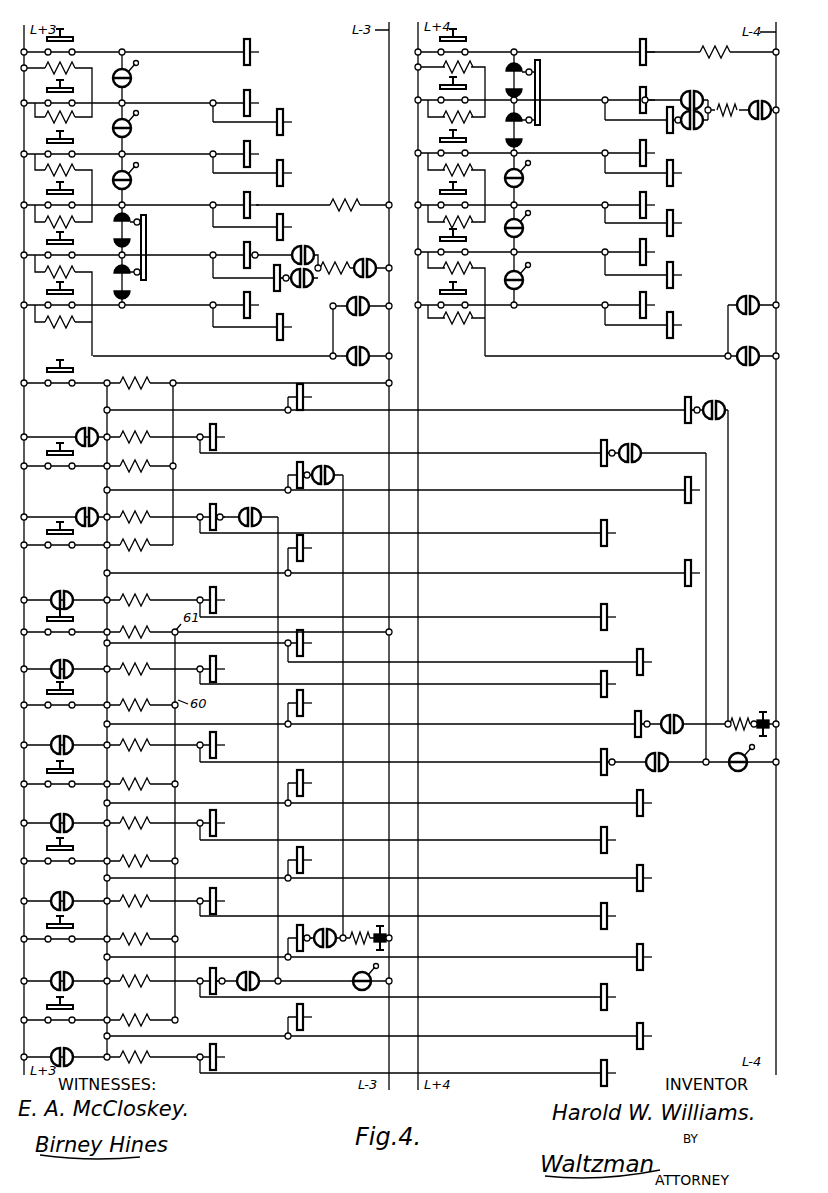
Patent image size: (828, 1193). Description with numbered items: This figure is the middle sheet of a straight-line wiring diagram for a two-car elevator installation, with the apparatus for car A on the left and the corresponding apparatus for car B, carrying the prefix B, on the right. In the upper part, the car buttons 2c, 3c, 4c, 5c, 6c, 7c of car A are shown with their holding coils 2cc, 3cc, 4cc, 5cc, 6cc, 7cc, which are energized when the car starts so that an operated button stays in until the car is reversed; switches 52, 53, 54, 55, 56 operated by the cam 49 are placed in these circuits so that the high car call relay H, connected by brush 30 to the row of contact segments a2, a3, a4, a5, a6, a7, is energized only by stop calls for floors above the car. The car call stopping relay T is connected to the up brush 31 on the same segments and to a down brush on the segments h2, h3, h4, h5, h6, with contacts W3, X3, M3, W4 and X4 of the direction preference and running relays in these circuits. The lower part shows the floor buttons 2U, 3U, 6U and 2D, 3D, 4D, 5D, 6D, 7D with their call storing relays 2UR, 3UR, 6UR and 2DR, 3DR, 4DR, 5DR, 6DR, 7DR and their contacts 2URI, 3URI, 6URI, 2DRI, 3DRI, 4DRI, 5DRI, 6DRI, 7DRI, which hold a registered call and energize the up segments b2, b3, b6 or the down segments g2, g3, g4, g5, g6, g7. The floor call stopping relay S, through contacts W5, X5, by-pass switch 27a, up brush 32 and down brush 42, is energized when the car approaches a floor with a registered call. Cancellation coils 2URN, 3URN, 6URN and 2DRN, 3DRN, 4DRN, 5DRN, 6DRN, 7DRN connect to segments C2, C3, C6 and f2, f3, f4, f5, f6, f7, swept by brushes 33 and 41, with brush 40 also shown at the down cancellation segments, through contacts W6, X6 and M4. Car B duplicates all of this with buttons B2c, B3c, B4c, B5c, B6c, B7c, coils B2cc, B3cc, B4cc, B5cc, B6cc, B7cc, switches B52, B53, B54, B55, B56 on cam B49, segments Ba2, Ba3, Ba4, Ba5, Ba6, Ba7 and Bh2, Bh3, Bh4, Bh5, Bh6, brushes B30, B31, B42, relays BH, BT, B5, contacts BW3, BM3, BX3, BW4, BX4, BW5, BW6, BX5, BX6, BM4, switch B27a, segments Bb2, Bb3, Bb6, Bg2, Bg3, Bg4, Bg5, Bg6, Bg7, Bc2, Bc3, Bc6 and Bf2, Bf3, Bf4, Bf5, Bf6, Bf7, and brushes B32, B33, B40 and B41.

The car button 7c is at (73, 42).
The car button 6c is at (66, 91).
The car button 5c is at (70, 142).
The car button 4c is at (67, 193).
The car button 3c is at (73, 247).
The car button 2c is at (74, 295).
The car button holding coil 7cc is at (72, 64).
The car button holding coil 6cc is at (52, 114).
The car button holding coil 5cc is at (72, 166).
The car button holding coil 4cc is at (52, 218).
The car button holding coil 3cc is at (76, 270).
The car button holding coil 2cc is at (76, 319).
The cam-operated switch 56 is at (133, 74).
The cam-operated switch 55 is at (133, 124).
The cam-operated switch 54 is at (133, 176).
The cam-operated switch 53 is at (112, 236).
The cam-operated switch 52 is at (134, 285).
The cam 49 is at (147, 245).
The contact segment a7 is at (260, 52).
The contact segment a6 is at (260, 103).
The contact segment a5 is at (260, 154).
The contact segment a4 is at (246, 203).
The contact segment a3 is at (241, 251).
The contact segment a2 is at (247, 303).
The brush 30 is at (261, 205).
The up brush 31 is at (257, 251).
The down brush 42 is at (263, 304).
The contact segment h6 is at (293, 122).
The contact segment h5 is at (293, 173).
The contact segment h4 is at (293, 227).
The contact segment h3 is at (272, 278).
The contact segment h2 is at (293, 327).
The high car call relay H is at (345, 196).
The car call stopping relay T is at (335, 258).
The floor call stopping relay S is at (360, 933).
The up direction preference relay W3 is at (304, 247).
The car running relay M3 is at (366, 258).
The down direction preference relay X3 is at (302, 285).
The up direction preference relay W4 is at (360, 298).
The down direction preference relay X4 is at (359, 348).
The up floor button 6U is at (74, 373).
The up floor button 3U is at (53, 456).
The up floor button 2U is at (53, 535).
The up floor call storing relay 6UR is at (140, 377).
The up floor call storing relay 3UR is at (135, 457).
The up floor call storing relay 2UR is at (135, 553).
The up call registering relay contact 6URI is at (78, 430).
The up call registering relay contact 3URI is at (78, 509).
The up call registering relay contact 2URI is at (57, 593).
The up cancellation coil 6URN is at (133, 429).
The up cancellation coil 3URN is at (133, 508).
The up cancellation coil 2URN is at (136, 592).
The up cancellation contact segment C6 is at (225, 437).
The up cancellation contact segment C3 is at (223, 511).
The up cancellation contact segment C2 is at (225, 600).
The brush 33 is at (224, 517).
The contact segment b6 is at (314, 397).
The contact segment b3 is at (297, 483).
The contact segment b2 is at (314, 548).
The up brush 32 is at (307, 485).
The up direction preference relay W5 is at (335, 470).
The up direction preference relay W6 is at (248, 509).
The down floor button 7D is at (74, 622).
The down floor button 6D is at (74, 695).
The down floor button 5D is at (76, 774).
The down floor button 4D is at (74, 851).
The down floor button 3D is at (74, 929).
The down floor button 2D is at (74, 1009).
The down floor call storing relay 7DR is at (134, 624).
The down floor call storing relay 6DR is at (132, 697).
The down floor call storing relay 5DR is at (136, 775).
The down floor call storing relay 4DR is at (134, 852).
The down floor call storing relay 3DR is at (134, 930).
The down floor call storing relay 2DR is at (134, 1010).
The down call registering relay contact 7DRI is at (56, 661).
The down call registering relay contact 6DRI is at (57, 737).
The down call registering relay contact 5DRI is at (60, 815).
The down call registering relay contact 4DRI is at (60, 893).
The down call registering relay contact 3DRI is at (56, 972).
The down call registering relay contact 2DRI is at (56, 1050).
The down cancellation coil 7DRN is at (133, 660).
The down cancellation coil 6DRN is at (133, 736).
The down cancellation coil 5DRN is at (133, 813).
The down cancellation coil 4DRN is at (133, 891).
The down cancellation coil 3DRN is at (133, 971).
The down cancellation coil 2DRN is at (133, 1048).
The down cancellation contact segment f7 is at (224, 669).
The down cancellation contact segment f6 is at (223, 745).
The down cancellation contact segment f5 is at (223, 823).
The down cancellation contact segment f4 is at (223, 901).
The down cancellation contact segment f3 is at (226, 972).
The down cancellation contact segment f2 is at (223, 1057).
The contact segment g7 is at (314, 643).
The contact segment g6 is at (314, 703).
The contact segment g5 is at (314, 783).
The contact segment g4 is at (314, 860).
The contact segment g3 is at (316, 929).
The contact segment g2 is at (314, 1017).
The connection 40 is at (218, 965).
The brush 41 is at (316, 935).
The by-pass switch 27a is at (369, 930).
The down direction preference relay X5 is at (332, 943).
The down direction preference relay X6 is at (252, 976).
The car running relay M4 is at (356, 975).
The car button B7c is at (469, 42).
The car button B6c is at (446, 88).
The car button B5c is at (470, 140).
The car button B4c is at (468, 191).
The car button B3c is at (466, 239).
The car button B2c is at (466, 293).
The car button holding coil B7cc is at (448, 63).
The car button holding coil B6cc is at (448, 113).
The car button holding coil B5cc is at (469, 165).
The car button holding coil B4cc is at (447, 216).
The car button holding coil B3cc is at (472, 263).
The car button holding coil B2cc is at (448, 326).
The cam-operated switch B56 is at (505, 76).
The cam-operated switch B55 is at (530, 130).
The cam-operated switch B54 is at (530, 177).
The cam-operated switch B53 is at (530, 227).
The cam-operated switch B52 is at (530, 279).
The cam B49 is at (553, 92).
The contact segment Ba7 is at (660, 46).
The contact segment Ba6 is at (638, 95).
The contact segment Ba5 is at (628, 150).
The contact segment Ba4 is at (660, 204).
The contact segment Ba3 is at (660, 252).
The contact segment Ba2 is at (660, 305).
The brush B30 is at (660, 52).
The up brush B31 is at (656, 95).
The down brush B42 is at (666, 118).
The high car call relay BH is at (715, 43).
The car call stopping relay BT is at (735, 101).
The floor call stopping relay B5 is at (732, 733).
The contact segment Bh6 is at (667, 127).
The contact segment Bh5 is at (687, 173).
The contact segment Bh4 is at (687, 223).
The contact segment Bh3 is at (687, 275).
The contact segment Bh2 is at (687, 325).
The up direction preference relay BW3 is at (702, 93).
The car running relay BM3 is at (753, 118).
The down direction preference relay BX3 is at (706, 131).
The up direction preference relay BW4 is at (742, 297).
The down direction preference relay BX4 is at (743, 348).
The up direction preference relay BW5 is at (726, 402).
The up direction preference relay BW6 is at (647, 447).
The down direction preference relay BX5 is at (673, 716).
The down direction preference relay BX6 is at (666, 770).
The car running relay BM4 is at (737, 766).
The by-pass switch B27a is at (756, 715).
The contact segment Bb6 is at (678, 398).
The contact segment Bb3 is at (680, 481).
The contact segment Bb2 is at (675, 570).
The up brush B32 is at (699, 398).
The brush B33 is at (615, 457).
The up cancellation contact segment Bc6 is at (613, 451).
The up cancellation contact segment Bc3 is at (621, 532).
The up cancellation contact segment Bc2 is at (621, 617).
The contact segment Bg7 is at (656, 662).
The contact segment Bg6 is at (641, 725).
The contact segment Bg5 is at (658, 803).
The contact segment Bg4 is at (658, 878).
The contact segment Bg3 is at (658, 957).
The contact segment Bg2 is at (658, 1036).
The down cancellation contact segment Bf7 is at (620, 684).
The down cancellation contact segment Bf6 is at (598, 764).
The down cancellation contact segment Bf5 is at (620, 840).
The down cancellation contact segment Bf4 is at (620, 916).
The down cancellation contact segment Bf3 is at (620, 997).
The down cancellation contact segment Bf2 is at (620, 1073).
The capacitor B40 is at (619, 768).
The brush B41 is at (655, 730).